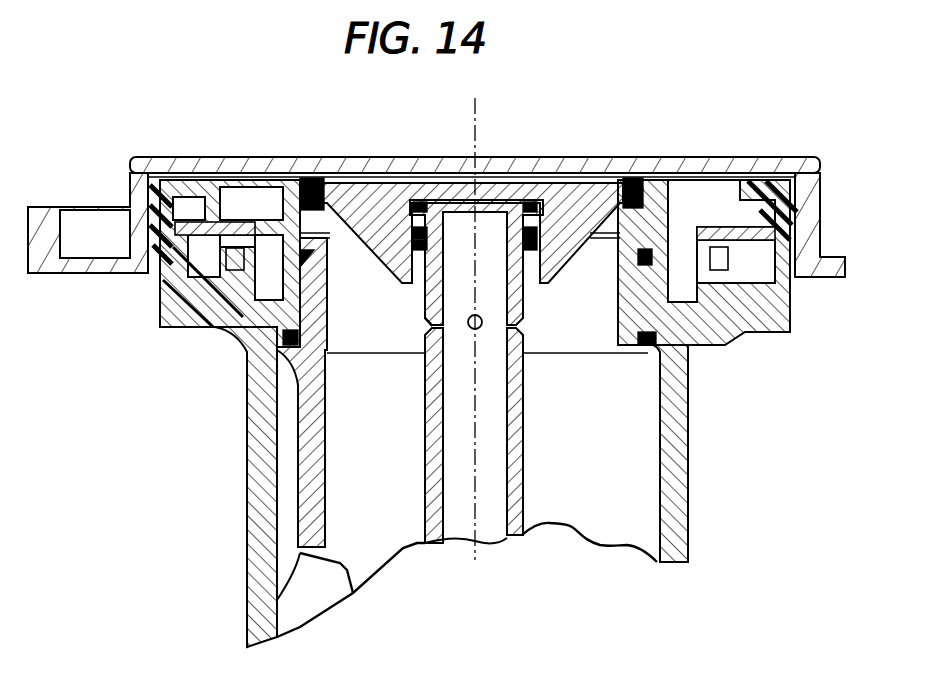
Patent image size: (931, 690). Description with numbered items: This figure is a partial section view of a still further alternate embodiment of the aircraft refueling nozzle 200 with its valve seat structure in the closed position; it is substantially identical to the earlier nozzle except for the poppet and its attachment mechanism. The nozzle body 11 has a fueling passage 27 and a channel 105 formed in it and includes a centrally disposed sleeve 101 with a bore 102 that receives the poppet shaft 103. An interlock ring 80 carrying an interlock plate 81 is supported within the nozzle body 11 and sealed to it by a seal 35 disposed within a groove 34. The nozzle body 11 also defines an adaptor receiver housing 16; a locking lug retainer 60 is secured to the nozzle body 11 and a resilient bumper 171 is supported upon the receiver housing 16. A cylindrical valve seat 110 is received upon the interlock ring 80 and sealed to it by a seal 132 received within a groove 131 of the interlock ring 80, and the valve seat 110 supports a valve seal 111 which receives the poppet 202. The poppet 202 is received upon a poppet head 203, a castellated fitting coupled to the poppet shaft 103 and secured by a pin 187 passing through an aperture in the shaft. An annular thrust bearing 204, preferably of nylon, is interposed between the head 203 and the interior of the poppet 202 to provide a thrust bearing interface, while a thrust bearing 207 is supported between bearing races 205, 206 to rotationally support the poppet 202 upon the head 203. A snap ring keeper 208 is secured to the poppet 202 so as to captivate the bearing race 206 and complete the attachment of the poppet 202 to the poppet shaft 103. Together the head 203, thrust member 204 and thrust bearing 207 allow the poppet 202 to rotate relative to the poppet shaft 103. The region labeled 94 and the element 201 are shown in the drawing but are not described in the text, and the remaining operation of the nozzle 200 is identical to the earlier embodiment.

The aircraft refueling nozzle 200 is at (812, 30).
The cylindrical valve seat 110 is at (720, 157).
The top wall of cap 201 is at (818, 157).
The resilient bumper 171 is at (790, 203).
The locking lug retainer 60 is at (777, 237).
The adaptor receiver housing 16 is at (767, 302).
The groove 34 is at (688, 345).
The seal 35 is at (688, 372).
The nozzle body 11 is at (690, 445).
The fueling passage 27 is at (638, 518).
The sleeve 101 is at (523, 452).
The bore 102 is at (497, 493).
The poppet shaft 103 is at (460, 520).
The pin 187 is at (483, 322).
The groove 131 is at (625, 240).
The seal 132 is at (640, 262).
The valve seal 111 is at (640, 178).
The poppet 202 is at (572, 183).
The poppet head 203 is at (437, 200).
The annular thrust bearing 204 is at (418, 202).
The bearing race 205 is at (412, 262).
The bearing race 206 is at (418, 253).
The thrust bearing 207 is at (416, 240).
The snap ring keeper 208 is at (422, 283).
The interlock ring 80 is at (307, 367).
The interlock plate 81 is at (307, 477).
The channel 105 is at (285, 508).
The chamber 94 is at (303, 578).